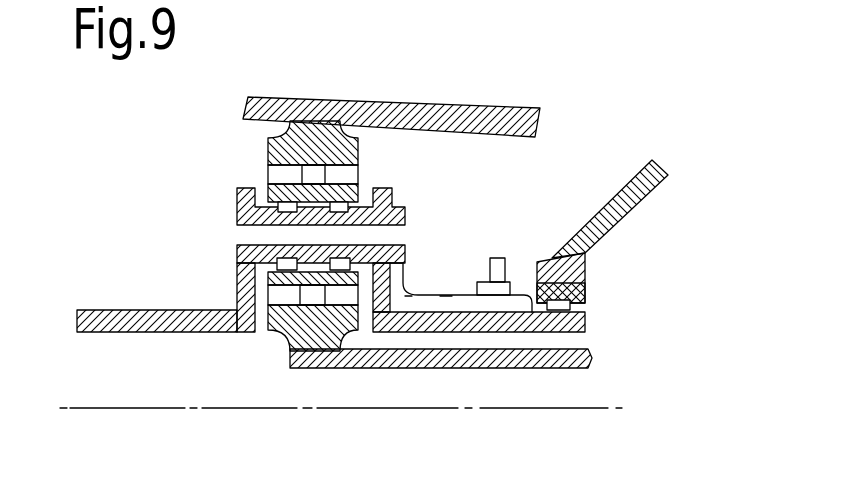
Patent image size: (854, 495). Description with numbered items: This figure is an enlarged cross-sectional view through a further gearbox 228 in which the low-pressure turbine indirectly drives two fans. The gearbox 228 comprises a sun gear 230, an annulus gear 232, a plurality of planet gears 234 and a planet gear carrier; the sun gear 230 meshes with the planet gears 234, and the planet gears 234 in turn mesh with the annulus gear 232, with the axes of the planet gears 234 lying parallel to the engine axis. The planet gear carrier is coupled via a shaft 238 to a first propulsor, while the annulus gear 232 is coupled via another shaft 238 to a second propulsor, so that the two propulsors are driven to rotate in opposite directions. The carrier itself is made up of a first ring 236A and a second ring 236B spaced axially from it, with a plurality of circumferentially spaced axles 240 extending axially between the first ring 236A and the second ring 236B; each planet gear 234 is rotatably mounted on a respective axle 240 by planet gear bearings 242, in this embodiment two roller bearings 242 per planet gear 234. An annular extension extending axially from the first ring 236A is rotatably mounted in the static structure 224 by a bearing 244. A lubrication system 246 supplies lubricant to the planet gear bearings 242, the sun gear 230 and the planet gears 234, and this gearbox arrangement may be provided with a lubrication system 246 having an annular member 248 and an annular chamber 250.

The static structure 224 is at (637, 208).
The gearbox 228 is at (203, 367).
The sun gear 230 is at (288, 303).
The annulus gear 232 is at (303, 150).
The planet gear 234 is at (345, 196).
The first ring 236A is at (386, 294).
The second ring 236B is at (242, 282).
The shaft 238 is at (352, 100).
The axle 240 is at (267, 215).
The planet gear bearing 242 is at (275, 258).
The bearing 244 is at (580, 294).
The lubrication system 246 is at (505, 250).
The annular member 248 is at (447, 297).
The annular chamber 250 is at (412, 305).